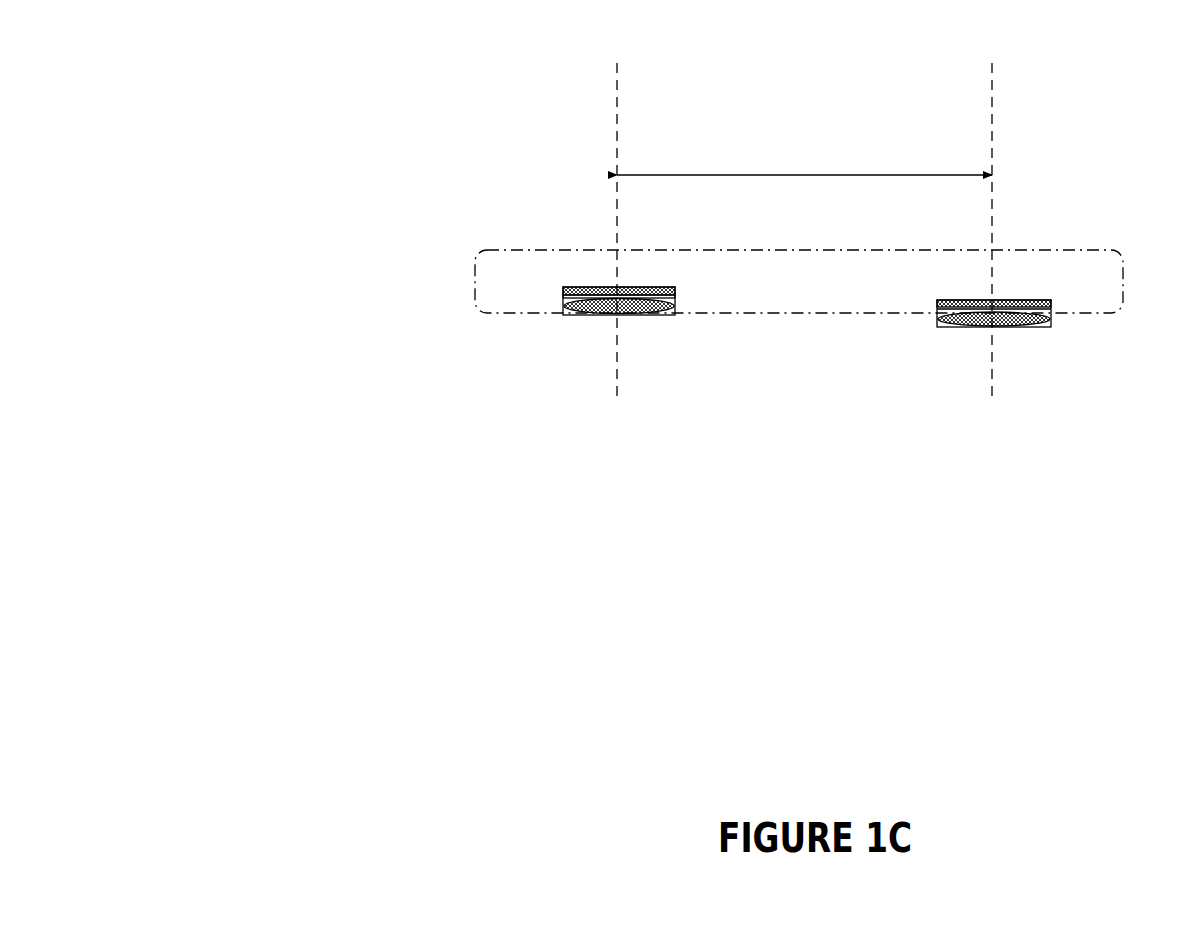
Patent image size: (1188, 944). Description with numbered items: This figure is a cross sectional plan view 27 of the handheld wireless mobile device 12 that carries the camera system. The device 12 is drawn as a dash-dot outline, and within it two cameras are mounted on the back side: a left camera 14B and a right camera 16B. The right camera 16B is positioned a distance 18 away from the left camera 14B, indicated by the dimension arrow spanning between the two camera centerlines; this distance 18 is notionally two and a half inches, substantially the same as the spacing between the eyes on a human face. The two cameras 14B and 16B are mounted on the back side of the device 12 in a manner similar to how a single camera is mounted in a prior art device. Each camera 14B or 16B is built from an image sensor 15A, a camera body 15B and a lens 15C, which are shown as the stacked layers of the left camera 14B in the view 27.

The handheld wireless mobile device 12 is at (336, 236).
The left camera 14B is at (626, 374).
The image sensor 15A is at (672, 290).
The camera body 15B is at (672, 298).
The lens 15C is at (672, 318).
The right camera 16B is at (1040, 352).
The distance 18 is at (875, 175).
The cross sectional plan view 27 is at (462, 300).